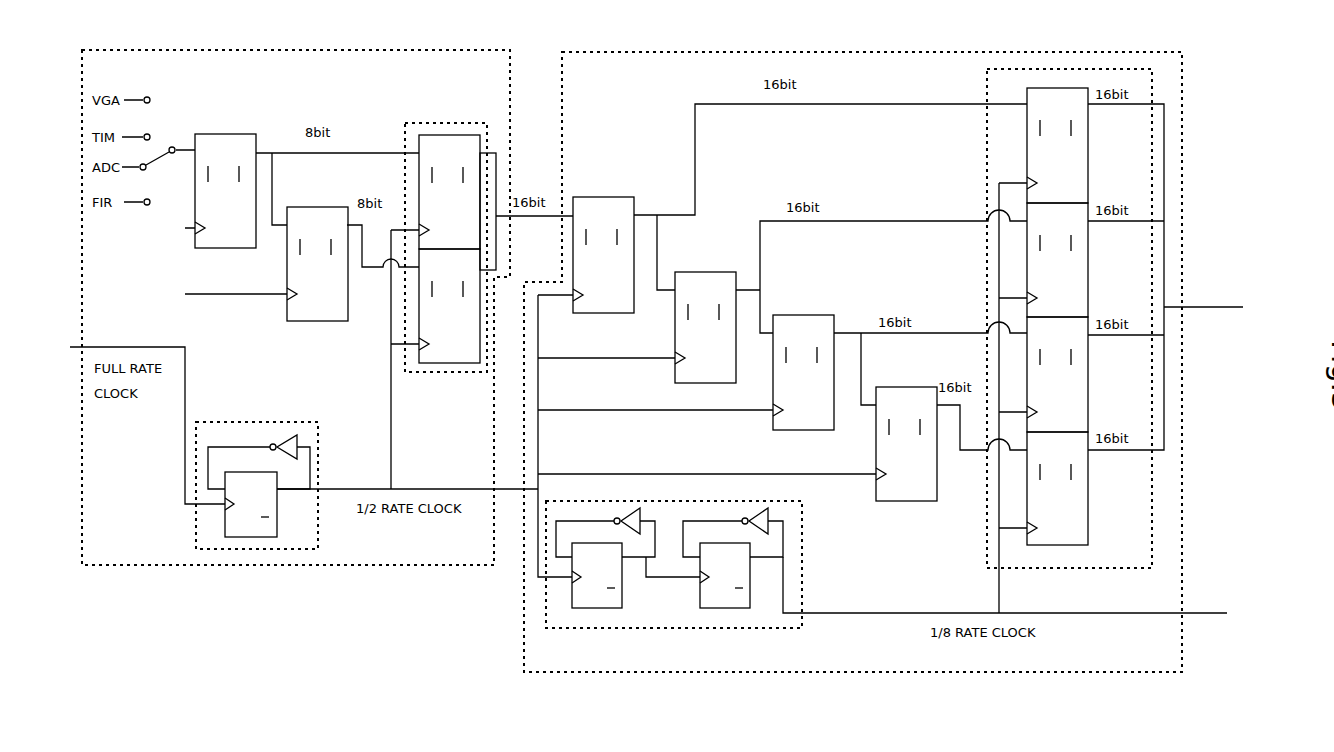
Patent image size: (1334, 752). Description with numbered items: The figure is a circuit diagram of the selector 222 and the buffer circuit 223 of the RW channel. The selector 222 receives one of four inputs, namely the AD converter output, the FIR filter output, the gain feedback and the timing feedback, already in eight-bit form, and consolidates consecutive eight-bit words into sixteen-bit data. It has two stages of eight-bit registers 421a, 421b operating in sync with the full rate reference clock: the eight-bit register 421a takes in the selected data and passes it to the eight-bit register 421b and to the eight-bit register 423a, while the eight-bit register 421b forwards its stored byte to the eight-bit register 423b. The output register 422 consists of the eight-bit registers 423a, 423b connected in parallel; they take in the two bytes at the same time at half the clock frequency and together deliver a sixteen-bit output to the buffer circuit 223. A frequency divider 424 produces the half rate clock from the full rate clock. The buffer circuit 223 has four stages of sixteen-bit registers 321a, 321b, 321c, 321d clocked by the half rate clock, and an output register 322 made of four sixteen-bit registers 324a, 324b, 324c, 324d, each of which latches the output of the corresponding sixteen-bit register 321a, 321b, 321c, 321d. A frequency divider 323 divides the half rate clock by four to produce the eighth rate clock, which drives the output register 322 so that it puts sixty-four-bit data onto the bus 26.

The selector 222 is at (318, 565).
The 8-bit register 421a is at (218, 134).
The 8-bit register 421b is at (313, 321).
The output register 422 is at (410, 123).
The 8-bit register 423a is at (460, 135).
The 8-bit register 423b is at (448, 372).
The frequency divider 424 is at (222, 422).
The buffer circuit 223 is at (810, 672).
The 16-bit register 321a is at (600, 197).
The 16-bit register 321b is at (692, 272).
The 16-bit register 321c is at (790, 315).
The 16-bit register 321d is at (900, 501).
The output register 322 is at (987, 498).
The frequency divider 323 is at (626, 628).
The 16-bit register 324a is at (1087, 167).
The 16-bit register 324b is at (1087, 290).
The 16-bit register 324c is at (1087, 389).
The 16-bit register 324d is at (1087, 528).
The bus 26 is at (1243, 307).